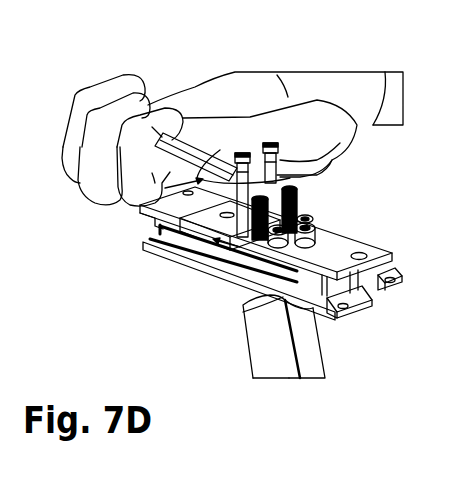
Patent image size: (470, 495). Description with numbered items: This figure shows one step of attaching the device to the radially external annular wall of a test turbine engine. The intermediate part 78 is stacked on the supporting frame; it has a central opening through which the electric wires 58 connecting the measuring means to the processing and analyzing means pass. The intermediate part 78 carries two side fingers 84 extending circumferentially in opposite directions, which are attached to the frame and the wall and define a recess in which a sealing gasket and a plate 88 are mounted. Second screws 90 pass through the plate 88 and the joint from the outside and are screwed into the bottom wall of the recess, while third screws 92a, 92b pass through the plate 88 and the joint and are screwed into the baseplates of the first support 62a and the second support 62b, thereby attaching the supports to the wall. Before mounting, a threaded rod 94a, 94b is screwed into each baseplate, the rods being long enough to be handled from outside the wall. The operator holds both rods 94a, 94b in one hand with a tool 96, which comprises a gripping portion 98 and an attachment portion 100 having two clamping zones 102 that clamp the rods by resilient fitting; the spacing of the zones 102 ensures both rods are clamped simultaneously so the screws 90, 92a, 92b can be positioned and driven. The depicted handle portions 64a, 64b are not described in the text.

The electric wires 58 is at (220, 283).
The first support 62a is at (327, 348).
The second support 62b is at (245, 347).
The handle part 64a is at (310, 363).
The handle part 64b is at (267, 362).
The intermediate part 78 is at (397, 257).
The side fingers 84 is at (383, 260).
The plate 88 is at (185, 255).
The second screws 90 is at (323, 222).
The third screws 92a is at (310, 207).
The third screws 92b is at (243, 311).
The threaded rod 94a is at (330, 172).
The threaded rod 94b is at (150, 222).
The tool 96 is at (78, 187).
The gripping portion 98 is at (183, 143).
The attachment portion 100 is at (258, 163).
The clamping zones 102 is at (233, 153).